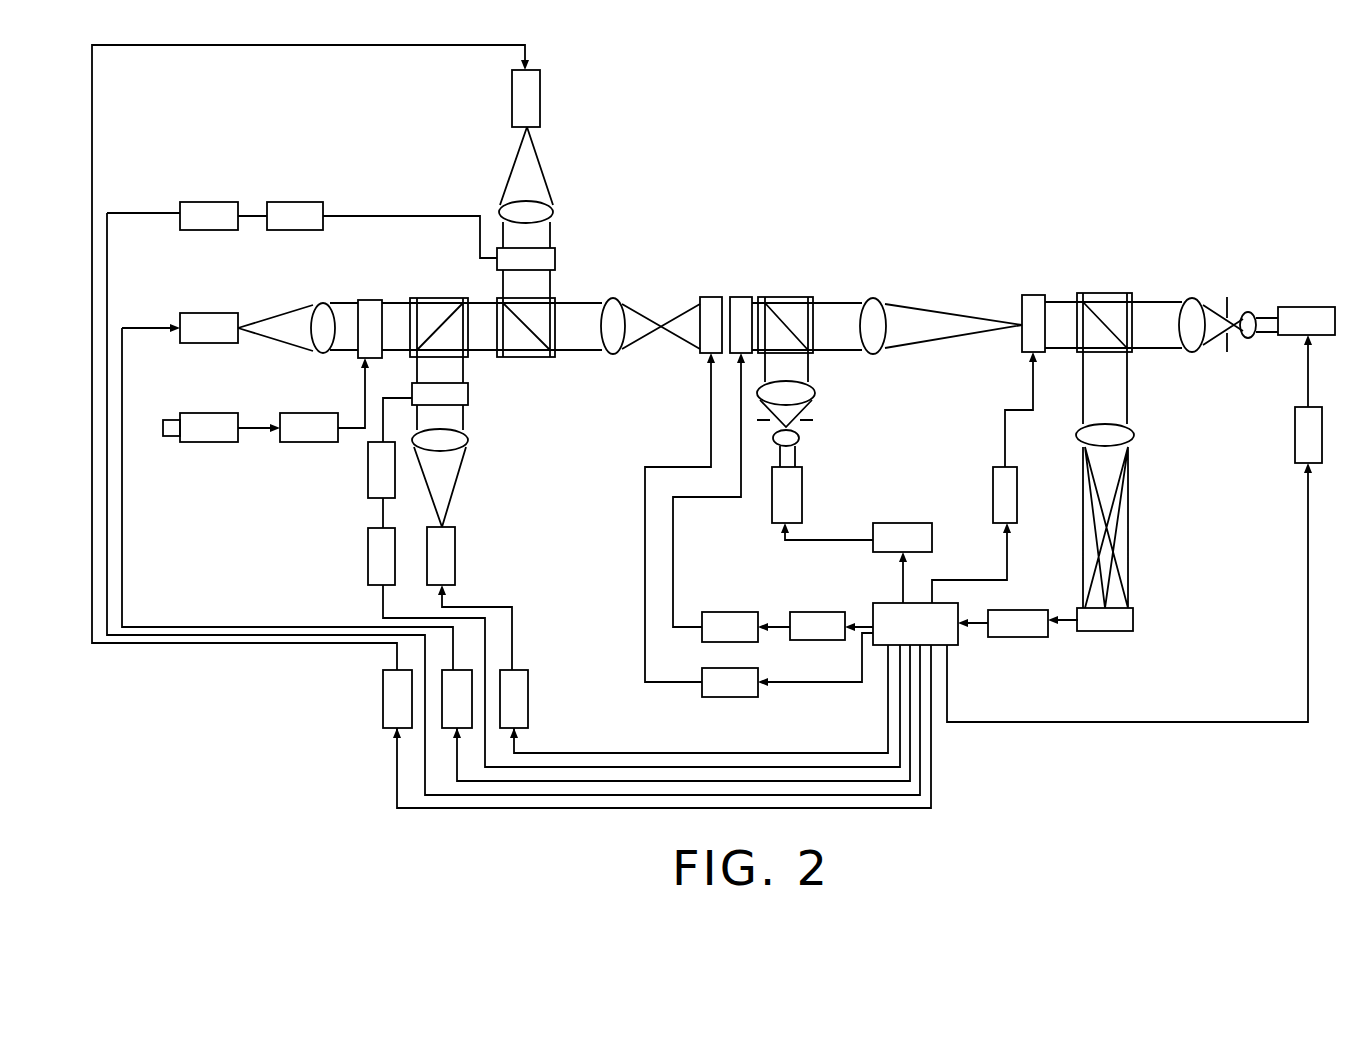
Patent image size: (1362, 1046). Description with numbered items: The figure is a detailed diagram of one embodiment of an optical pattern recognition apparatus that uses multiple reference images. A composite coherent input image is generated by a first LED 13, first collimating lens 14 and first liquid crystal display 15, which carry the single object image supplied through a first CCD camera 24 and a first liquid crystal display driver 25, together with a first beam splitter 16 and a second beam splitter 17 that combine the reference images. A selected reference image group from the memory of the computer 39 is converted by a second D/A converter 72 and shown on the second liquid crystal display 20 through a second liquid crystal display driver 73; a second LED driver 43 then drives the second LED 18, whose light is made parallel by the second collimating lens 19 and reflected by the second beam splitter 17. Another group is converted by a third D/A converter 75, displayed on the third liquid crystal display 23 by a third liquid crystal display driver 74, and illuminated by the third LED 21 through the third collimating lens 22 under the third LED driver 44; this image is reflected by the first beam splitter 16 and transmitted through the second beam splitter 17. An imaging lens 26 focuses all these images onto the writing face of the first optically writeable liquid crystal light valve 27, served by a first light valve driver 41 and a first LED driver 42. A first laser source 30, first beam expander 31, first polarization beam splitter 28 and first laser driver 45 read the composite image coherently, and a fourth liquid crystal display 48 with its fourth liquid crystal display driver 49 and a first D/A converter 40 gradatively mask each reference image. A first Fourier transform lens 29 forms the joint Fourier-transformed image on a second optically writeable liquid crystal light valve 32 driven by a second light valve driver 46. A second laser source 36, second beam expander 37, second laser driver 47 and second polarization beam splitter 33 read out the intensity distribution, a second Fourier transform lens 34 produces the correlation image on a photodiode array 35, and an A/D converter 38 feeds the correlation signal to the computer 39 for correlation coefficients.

The first LED 13 is at (218, 313).
The first collimating lens 14 is at (323, 303).
The first liquid crystal display 15 is at (370, 300).
The first beam splitter 16 is at (438, 298).
The second beam splitter 17 is at (555, 298).
The second LED 18 is at (512, 100).
The second collimating lens 19 is at (499, 212).
The second liquid crystal display 20 is at (555, 262).
The third LED 21 is at (455, 560).
The third collimating lens 22 is at (468, 437).
The third liquid crystal display 23 is at (468, 393).
The first CCD camera 24 is at (212, 442).
The first liquid crystal display driver 25 is at (310, 442).
The imaging lens 26 is at (618, 300).
The first optically writeable liquid crystal light valve 27 is at (712, 297).
The first polarization beam splitter 28 is at (800, 297).
The first Fourier transform lens 29 is at (880, 300).
The first laser source 30 is at (802, 480).
The first beam expander 31 is at (823, 382).
The second optically writeable liquid crystal light valve 32 is at (1033, 295).
The second polarization beam splitter 33 is at (1117, 293).
The second Fourier transform lens 34 is at (1134, 435).
The photodiode array 35 is at (1133, 620).
The second laser source 36 is at (1302, 307).
The second beam expander 37 is at (1182, 291).
The A/D converter 38 is at (1025, 637).
The computer 39 is at (958, 640).
The first D/A converter 40 is at (826, 612).
The first light valve driver 41 is at (737, 697).
The first LED driver 42 is at (442, 728).
The second LED driver 43 is at (383, 705).
The third LED driver 44 is at (528, 703).
The first laser driver 45 is at (912, 523).
The second light valve driver 46 is at (1017, 495).
The second laser driver 47 is at (1295, 428).
The fourth liquid crystal display 48 is at (745, 297).
The fourth liquid crystal display driver 49 is at (728, 612).
The second D/A converter 72 is at (218, 202).
The second liquid crystal display driver 73 is at (311, 202).
The third liquid crystal display driver 74 is at (368, 482).
The third D/A converter 75 is at (368, 553).